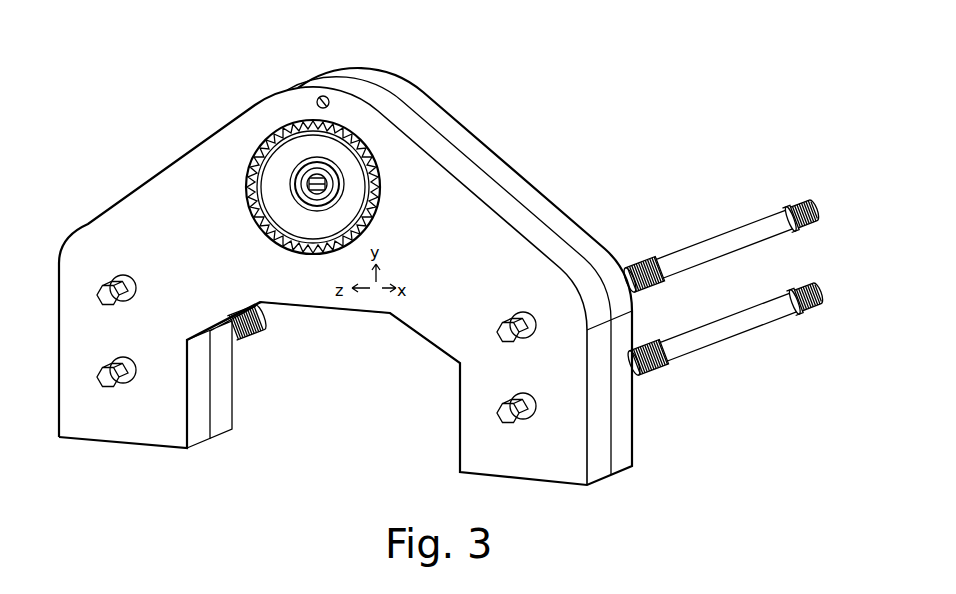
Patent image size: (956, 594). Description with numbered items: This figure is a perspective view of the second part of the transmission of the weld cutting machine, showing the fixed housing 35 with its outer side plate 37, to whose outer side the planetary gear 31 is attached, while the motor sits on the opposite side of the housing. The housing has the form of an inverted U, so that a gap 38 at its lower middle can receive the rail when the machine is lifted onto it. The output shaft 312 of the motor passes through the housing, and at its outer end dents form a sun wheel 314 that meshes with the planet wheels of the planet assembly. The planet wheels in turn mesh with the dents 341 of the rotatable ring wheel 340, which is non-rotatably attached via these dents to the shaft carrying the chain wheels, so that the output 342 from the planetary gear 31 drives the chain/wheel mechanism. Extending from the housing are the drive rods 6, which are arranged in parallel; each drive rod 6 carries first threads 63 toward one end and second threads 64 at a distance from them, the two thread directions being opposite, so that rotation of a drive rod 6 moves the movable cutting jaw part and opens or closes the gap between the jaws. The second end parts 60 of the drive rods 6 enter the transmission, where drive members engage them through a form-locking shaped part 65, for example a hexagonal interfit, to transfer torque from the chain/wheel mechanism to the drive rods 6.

The planetary gear 31 is at (245, 196).
The output shaft 312 is at (320, 160).
The sun wheel 314 is at (293, 175).
The rotatable ring wheel 340 is at (345, 124).
The dents 341 is at (305, 163).
The output 342 is at (345, 176).
The fixed housing 35 is at (570, 237).
The outer side plate 37 is at (480, 227).
The gap 38 is at (457, 385).
The drive rod 6 is at (725, 243).
The second end part 60 is at (490, 400).
The first threads 63 is at (800, 200).
The second threads 64 is at (640, 260).
The form-locking shaped part 65 is at (497, 412).